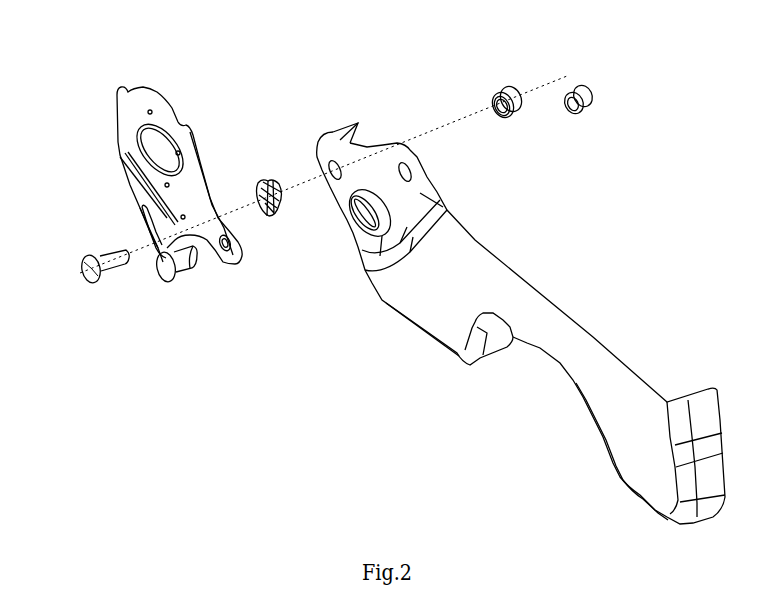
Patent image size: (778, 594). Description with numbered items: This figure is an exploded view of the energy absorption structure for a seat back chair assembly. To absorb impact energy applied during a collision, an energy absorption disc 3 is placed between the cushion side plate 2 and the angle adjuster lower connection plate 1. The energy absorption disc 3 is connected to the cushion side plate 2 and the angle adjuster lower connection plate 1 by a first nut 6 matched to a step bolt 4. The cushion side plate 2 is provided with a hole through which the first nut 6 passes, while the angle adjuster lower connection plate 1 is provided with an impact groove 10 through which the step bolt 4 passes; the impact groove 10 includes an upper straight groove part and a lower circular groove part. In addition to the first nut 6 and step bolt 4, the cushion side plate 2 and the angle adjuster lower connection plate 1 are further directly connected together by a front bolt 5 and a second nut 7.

The angle adjuster lower connection plate 1 is at (168, 98).
The cushion side plate 2 is at (560, 314).
The energy absorption disc 3 is at (277, 220).
The step bolt 4 is at (103, 283).
The front bolt 5 is at (180, 283).
The first nut 6 is at (513, 127).
The second nut 7 is at (588, 122).
The impact groove 10 is at (133, 214).